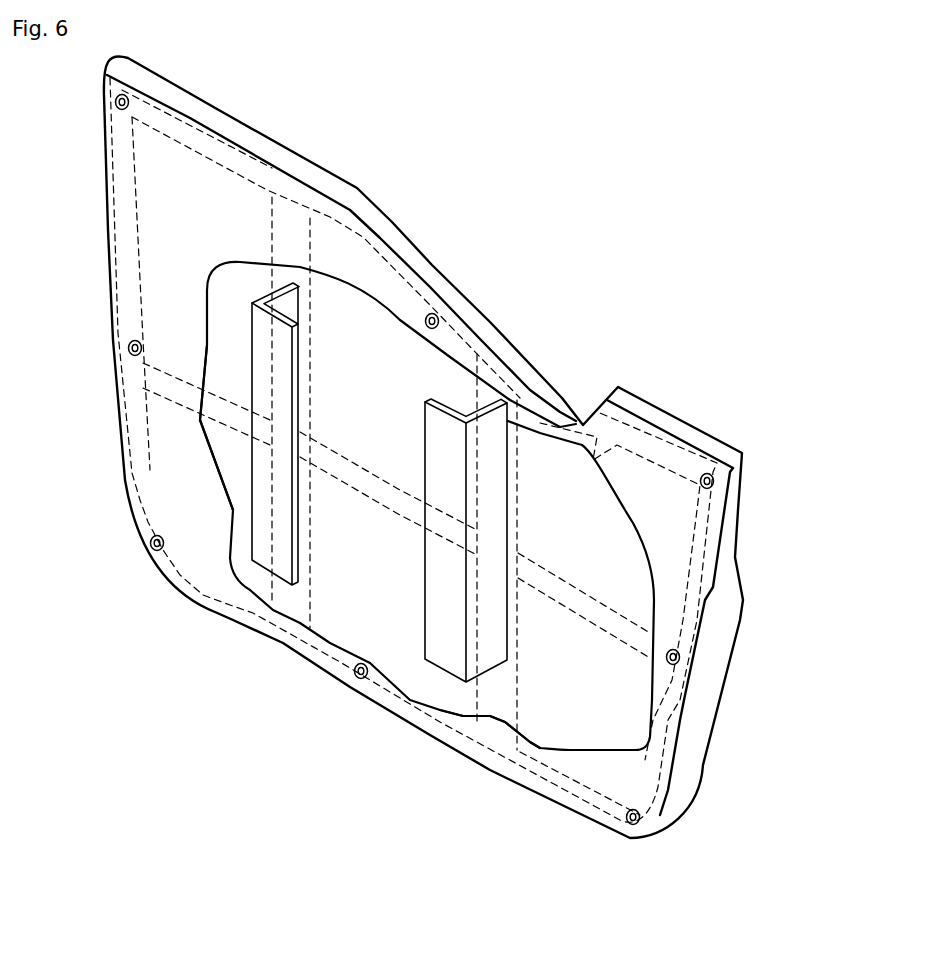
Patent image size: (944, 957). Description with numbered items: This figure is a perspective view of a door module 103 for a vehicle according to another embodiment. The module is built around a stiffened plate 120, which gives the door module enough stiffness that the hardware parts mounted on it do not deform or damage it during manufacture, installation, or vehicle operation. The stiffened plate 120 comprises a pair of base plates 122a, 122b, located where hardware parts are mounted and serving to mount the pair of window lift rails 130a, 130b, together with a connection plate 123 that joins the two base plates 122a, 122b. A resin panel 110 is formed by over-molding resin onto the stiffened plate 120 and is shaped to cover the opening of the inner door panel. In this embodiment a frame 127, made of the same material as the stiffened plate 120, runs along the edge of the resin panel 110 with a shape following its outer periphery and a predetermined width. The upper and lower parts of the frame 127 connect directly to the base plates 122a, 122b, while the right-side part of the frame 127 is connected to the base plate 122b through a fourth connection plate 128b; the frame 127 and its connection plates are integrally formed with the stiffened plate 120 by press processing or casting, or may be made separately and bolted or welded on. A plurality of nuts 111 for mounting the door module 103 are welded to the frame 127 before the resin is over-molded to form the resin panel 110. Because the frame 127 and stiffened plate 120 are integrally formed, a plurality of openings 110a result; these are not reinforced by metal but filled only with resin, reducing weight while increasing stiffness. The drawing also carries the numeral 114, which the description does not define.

The door module 103 is at (527, 310).
The resin panel 110 is at (717, 651).
The openings 110a is at (588, 553).
The nuts 111 is at (115, 102).
The side wall of raised portion 114 is at (203, 463).
The stiffened plate 120 is at (357, 497).
The base plate 122a is at (325, 355).
The base plate 122b is at (540, 510).
The connection plate 123 is at (385, 472).
The frame 127 is at (645, 422).
The fourth connection plate 128b is at (575, 613).
The window lift rail 130a is at (277, 343).
The window lift rail 130b is at (443, 473).